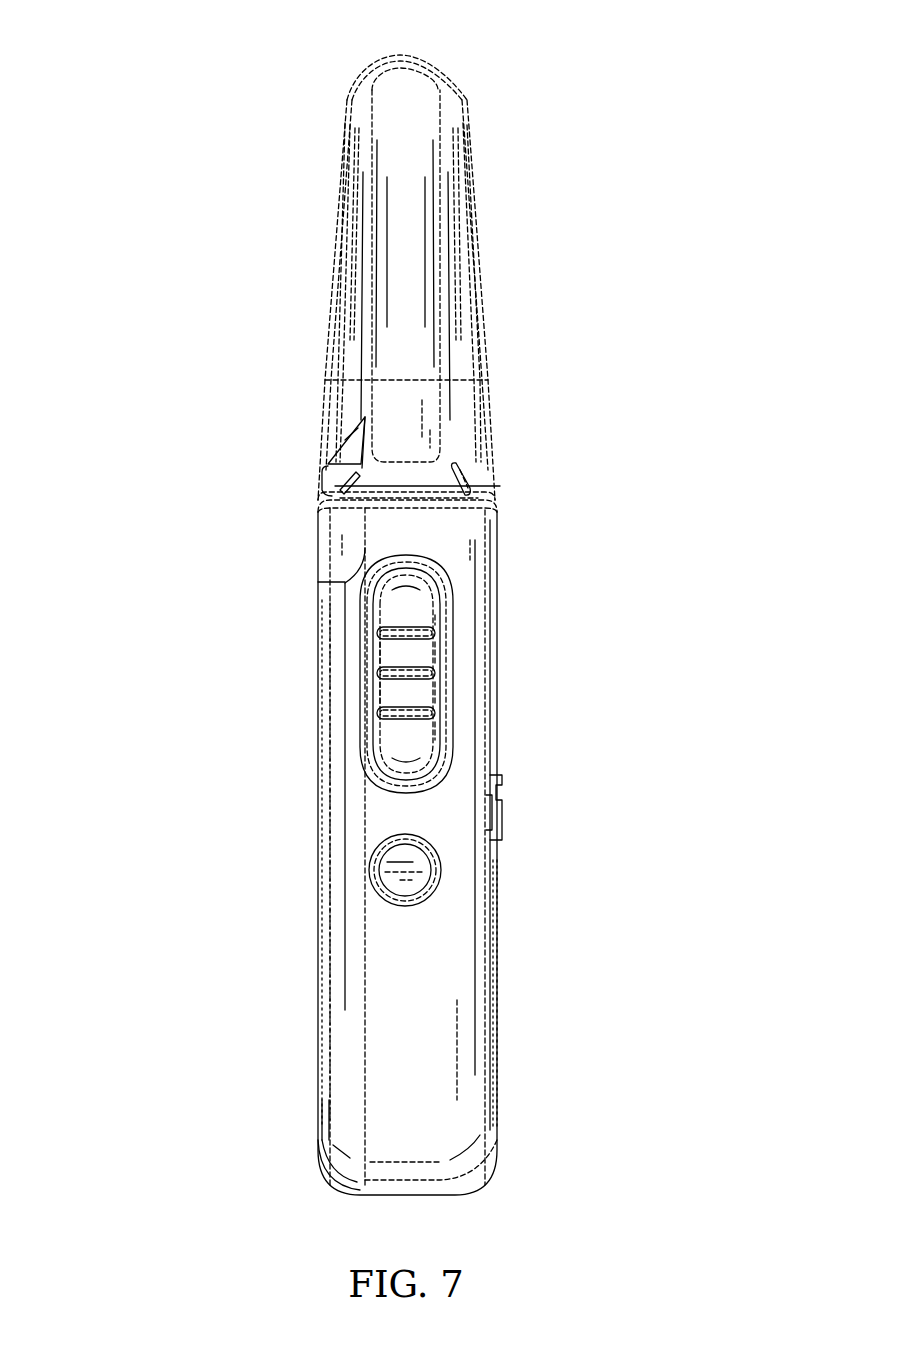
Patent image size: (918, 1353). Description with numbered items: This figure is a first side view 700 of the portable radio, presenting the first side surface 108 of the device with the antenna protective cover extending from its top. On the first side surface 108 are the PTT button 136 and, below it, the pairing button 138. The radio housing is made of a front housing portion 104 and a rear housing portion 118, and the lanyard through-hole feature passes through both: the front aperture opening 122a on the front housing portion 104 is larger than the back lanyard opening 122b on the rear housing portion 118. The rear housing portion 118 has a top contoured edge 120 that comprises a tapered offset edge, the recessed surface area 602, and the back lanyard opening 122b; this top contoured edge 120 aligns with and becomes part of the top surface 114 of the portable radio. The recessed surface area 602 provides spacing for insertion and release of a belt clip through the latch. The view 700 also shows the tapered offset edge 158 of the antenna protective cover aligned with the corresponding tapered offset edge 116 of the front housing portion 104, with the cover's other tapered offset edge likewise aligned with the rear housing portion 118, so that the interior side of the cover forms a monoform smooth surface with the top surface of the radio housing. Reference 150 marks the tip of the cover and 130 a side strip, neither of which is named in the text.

The first side view 700 is at (42, 43).
The cap tip 150 is at (420, 88).
The tapered offset edge 158 is at (458, 278).
The tapered offset edge 116 is at (465, 400).
The recessed surface area 602 is at (348, 448).
The front aperture opening 122a is at (465, 488).
The back lanyard opening 122b is at (337, 484).
The top contoured edge 120 is at (225, 375).
The rear housing portion 118 is at (130, 375).
The top surface 114 is at (583, 372).
The front housing portion 104 is at (660, 372).
The PTT button 136 is at (422, 652).
The pairing button 138 is at (425, 872).
The grip strip 130 is at (318, 903).
The first side surface 108 is at (422, 1052).